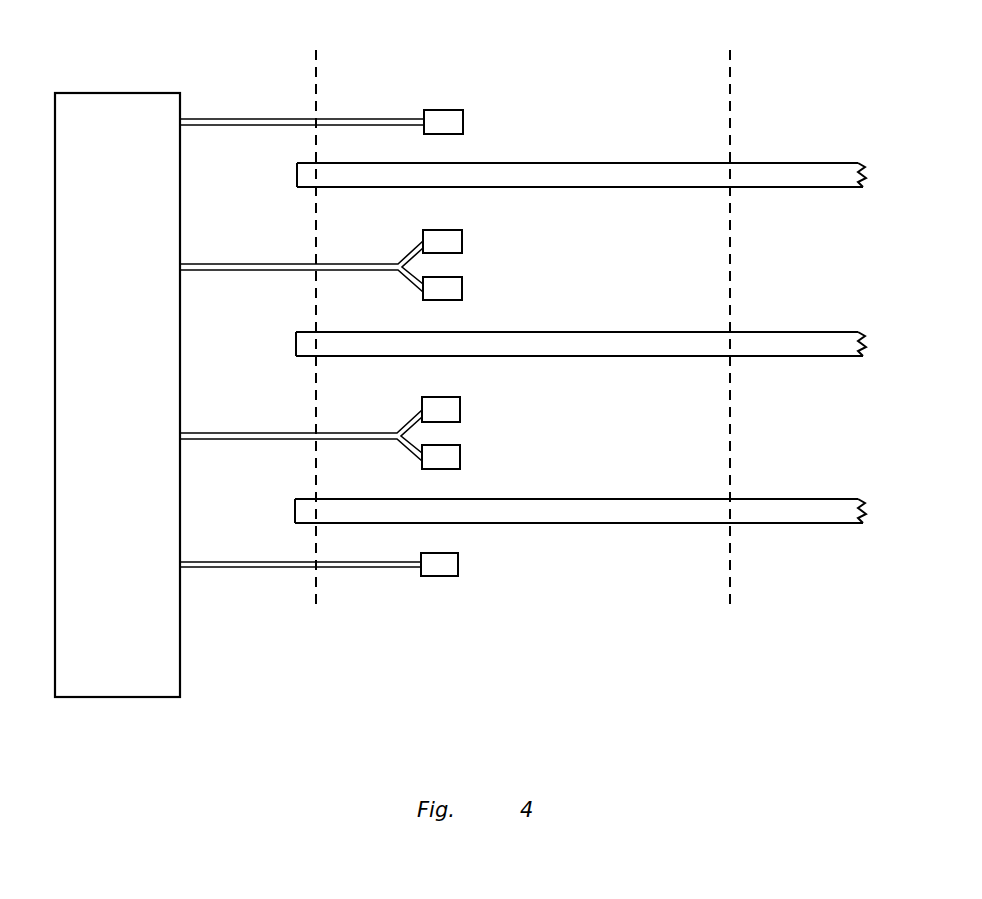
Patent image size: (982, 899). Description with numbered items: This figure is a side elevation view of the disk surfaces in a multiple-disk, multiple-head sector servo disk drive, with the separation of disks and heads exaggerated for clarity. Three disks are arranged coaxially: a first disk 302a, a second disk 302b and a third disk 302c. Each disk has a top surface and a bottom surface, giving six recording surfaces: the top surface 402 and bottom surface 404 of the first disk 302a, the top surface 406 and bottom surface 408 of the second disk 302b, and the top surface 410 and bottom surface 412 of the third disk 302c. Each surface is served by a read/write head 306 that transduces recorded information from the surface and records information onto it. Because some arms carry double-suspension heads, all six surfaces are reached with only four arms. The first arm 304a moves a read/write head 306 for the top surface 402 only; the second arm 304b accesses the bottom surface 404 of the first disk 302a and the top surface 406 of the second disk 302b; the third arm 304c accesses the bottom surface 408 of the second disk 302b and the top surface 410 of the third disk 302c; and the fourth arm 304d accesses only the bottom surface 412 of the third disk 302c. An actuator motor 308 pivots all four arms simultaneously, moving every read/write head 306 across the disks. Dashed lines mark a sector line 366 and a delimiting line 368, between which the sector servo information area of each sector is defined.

The actuator motor 308 is at (116, 92).
The sector line 366 is at (316, 65).
The delimiting line 368 is at (730, 65).
The first arm 304a is at (201, 119).
The second arm 304b is at (201, 264).
The third arm 304c is at (201, 433).
The fourth arm 304d is at (201, 562).
The read/write head 306 is at (463, 122).
The first disk 302a is at (539, 179).
The second disk 302b is at (539, 346).
The third disk 302c is at (539, 513).
The top surface of the first disk 402 is at (805, 163).
The bottom surface of the first disk 404 is at (786, 188).
The top surface of the second disk 406 is at (805, 332).
The bottom surface of the second disk 408 is at (786, 357).
The top surface of the third disk 410 is at (805, 499).
The bottom surface of the third disk 412 is at (786, 524).